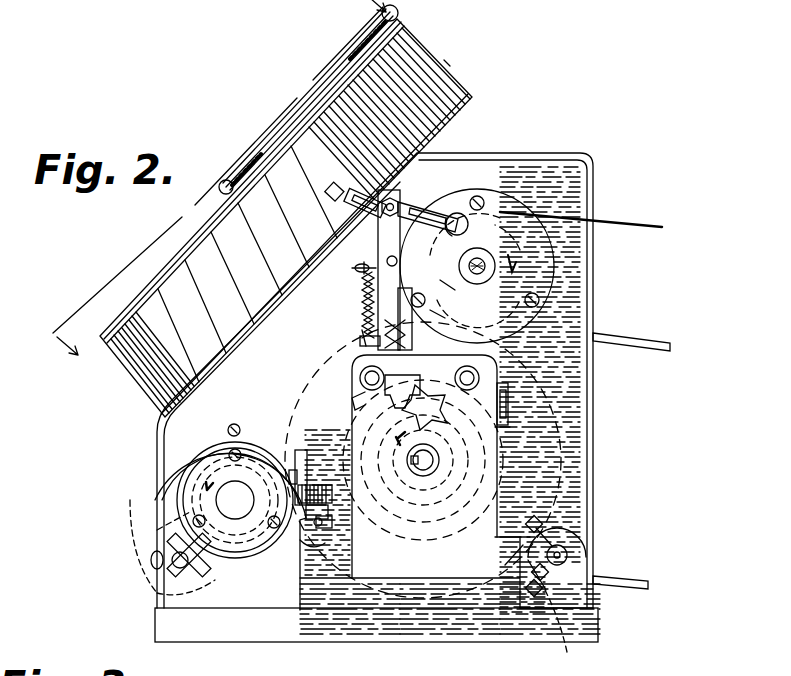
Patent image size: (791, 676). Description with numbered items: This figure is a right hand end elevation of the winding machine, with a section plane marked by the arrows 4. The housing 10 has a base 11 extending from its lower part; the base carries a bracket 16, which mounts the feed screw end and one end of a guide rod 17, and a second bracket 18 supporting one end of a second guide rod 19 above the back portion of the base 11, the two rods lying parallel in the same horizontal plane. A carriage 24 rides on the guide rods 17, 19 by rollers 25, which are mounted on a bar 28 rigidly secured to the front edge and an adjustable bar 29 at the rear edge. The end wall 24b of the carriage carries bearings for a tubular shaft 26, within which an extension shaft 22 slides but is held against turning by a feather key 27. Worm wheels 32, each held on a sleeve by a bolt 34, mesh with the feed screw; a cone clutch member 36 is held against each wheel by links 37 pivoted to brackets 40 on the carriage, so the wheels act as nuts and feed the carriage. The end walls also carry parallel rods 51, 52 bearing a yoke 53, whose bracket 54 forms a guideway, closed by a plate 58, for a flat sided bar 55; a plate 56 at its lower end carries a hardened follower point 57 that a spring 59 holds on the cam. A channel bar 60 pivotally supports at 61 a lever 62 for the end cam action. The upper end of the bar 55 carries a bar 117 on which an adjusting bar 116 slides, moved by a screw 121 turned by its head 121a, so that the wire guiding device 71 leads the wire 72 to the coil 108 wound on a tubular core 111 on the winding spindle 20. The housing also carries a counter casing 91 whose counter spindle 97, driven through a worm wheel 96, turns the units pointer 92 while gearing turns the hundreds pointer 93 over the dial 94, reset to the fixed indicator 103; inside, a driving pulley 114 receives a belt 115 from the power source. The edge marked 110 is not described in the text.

The section line 4- 4 is at (224, 185).
The housing 10 is at (590, 292).
The base 11 is at (307, 640).
The bracket 16 is at (177, 513).
The guide rod 17 is at (173, 565).
The second bracket 18 is at (573, 527).
The second guide rod 19 is at (600, 570).
The winding spindle 20 is at (490, 267).
The extension shaft 22 is at (432, 462).
The carriage 24 is at (388, 562).
The end wall 24b is at (480, 512).
The rollers 25 is at (157, 530).
The tubular shaft 26 is at (436, 455).
The feather key 27 is at (418, 485).
The bar 28 is at (227, 583).
The bar 29 is at (523, 540).
The worm wheels 32 is at (320, 486).
The bolt 34 is at (296, 452).
The clutch member 36 is at (335, 522).
The links 37 is at (335, 505).
The brackets 40 is at (320, 543).
The rod 51 is at (360, 378).
The rod 52 is at (520, 376).
The yoke 53 is at (487, 368).
The bracket 54 is at (328, 345).
The flat sided bar 55 is at (347, 290).
The plate 56 is at (388, 405).
The follower point 57 is at (415, 403).
The plate 58 is at (360, 328).
The spring 59 is at (353, 310).
The channel bar 60 is at (512, 403).
The pivot 61 is at (545, 378).
The lever 62 is at (510, 392).
The wire guiding device 71 is at (462, 207).
The wire 72 is at (631, 222).
The counter casing 91 is at (133, 378).
The units pointer 92 is at (303, 95).
The hundreds pointer 93 is at (340, 75).
The dial 94 is at (118, 320).
The worm wheel 96 is at (347, 398).
The counter spindle 97 is at (300, 247).
The fixed indicator 103 is at (430, 43).
The coil 108 is at (475, 257).
The edge 110 is at (380, 173).
The tubular core 111 is at (495, 288).
The driving pulley 114 is at (560, 448).
The belt 115 is at (640, 338).
The adjusting bar 116 is at (400, 207).
The bar 117 is at (452, 235).
The screw 121 is at (340, 210).
The head 121a is at (330, 192).